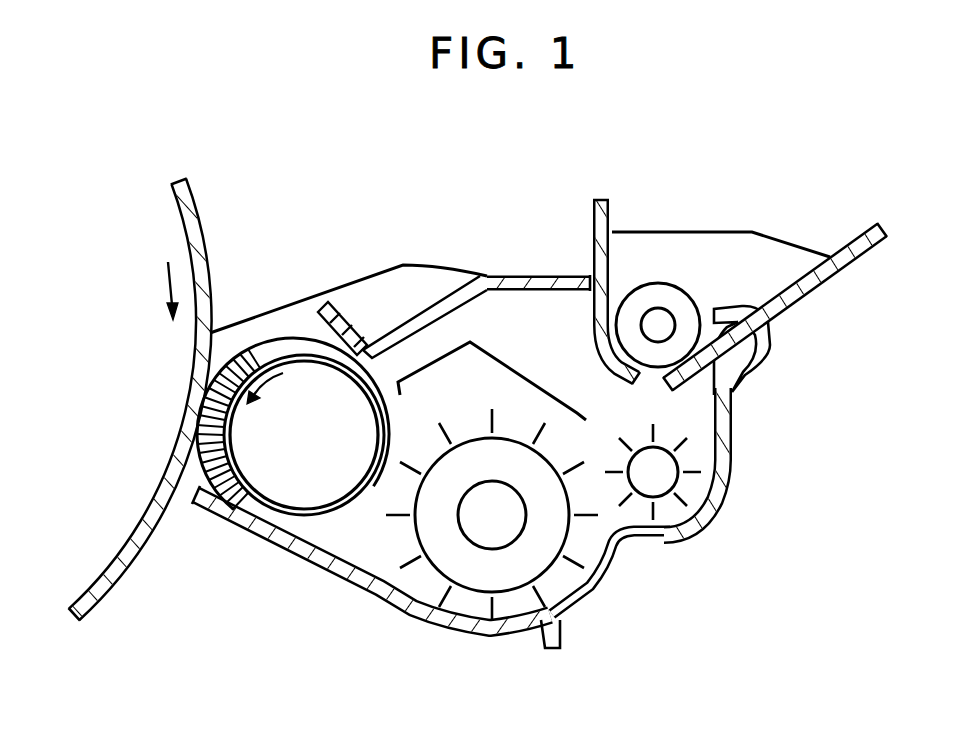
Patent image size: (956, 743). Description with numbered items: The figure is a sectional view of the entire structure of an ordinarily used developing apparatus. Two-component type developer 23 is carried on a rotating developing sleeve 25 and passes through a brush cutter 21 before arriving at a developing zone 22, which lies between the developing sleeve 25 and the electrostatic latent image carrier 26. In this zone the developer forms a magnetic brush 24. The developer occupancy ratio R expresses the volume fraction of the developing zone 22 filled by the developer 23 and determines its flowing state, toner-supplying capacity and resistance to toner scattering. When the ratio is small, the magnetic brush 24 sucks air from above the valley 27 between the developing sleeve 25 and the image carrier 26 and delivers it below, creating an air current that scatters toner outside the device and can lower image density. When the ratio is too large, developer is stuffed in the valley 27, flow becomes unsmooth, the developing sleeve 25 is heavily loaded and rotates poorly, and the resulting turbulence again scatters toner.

The brush cutter 21 is at (377, 318).
The developing zone 22 is at (180, 342).
The developer 23 is at (302, 332).
The magnetic brush 24 is at (253, 337).
The developing sleeve 25 is at (240, 497).
The image carrier 26 is at (202, 218).
The valley 27 is at (223, 352).